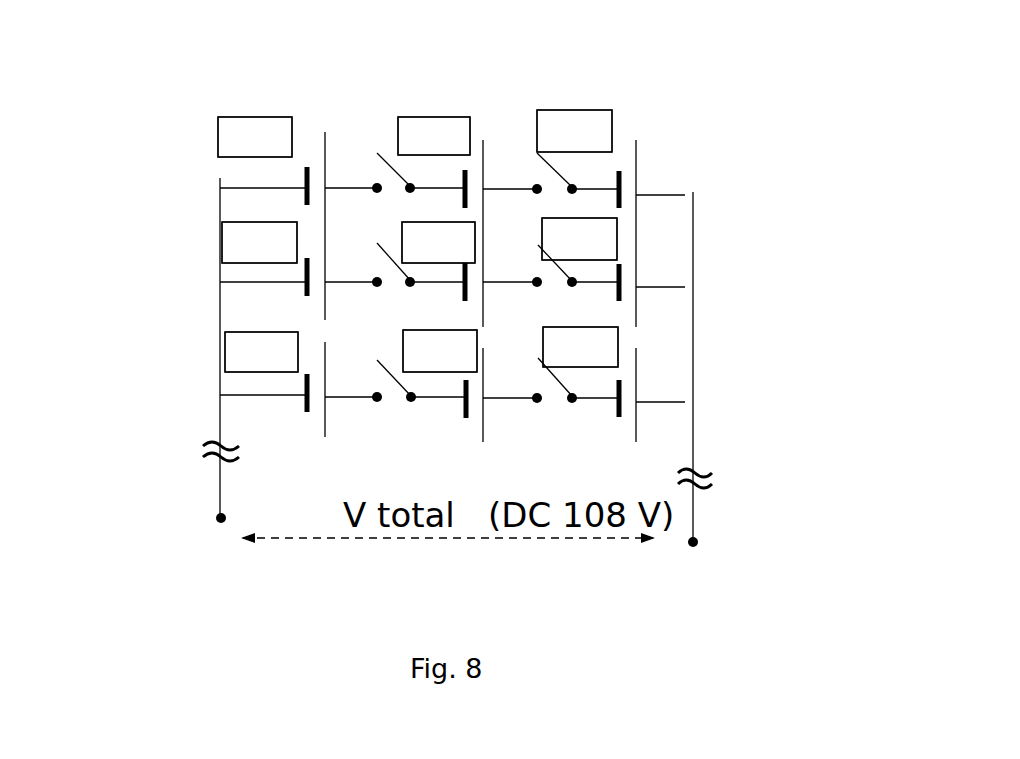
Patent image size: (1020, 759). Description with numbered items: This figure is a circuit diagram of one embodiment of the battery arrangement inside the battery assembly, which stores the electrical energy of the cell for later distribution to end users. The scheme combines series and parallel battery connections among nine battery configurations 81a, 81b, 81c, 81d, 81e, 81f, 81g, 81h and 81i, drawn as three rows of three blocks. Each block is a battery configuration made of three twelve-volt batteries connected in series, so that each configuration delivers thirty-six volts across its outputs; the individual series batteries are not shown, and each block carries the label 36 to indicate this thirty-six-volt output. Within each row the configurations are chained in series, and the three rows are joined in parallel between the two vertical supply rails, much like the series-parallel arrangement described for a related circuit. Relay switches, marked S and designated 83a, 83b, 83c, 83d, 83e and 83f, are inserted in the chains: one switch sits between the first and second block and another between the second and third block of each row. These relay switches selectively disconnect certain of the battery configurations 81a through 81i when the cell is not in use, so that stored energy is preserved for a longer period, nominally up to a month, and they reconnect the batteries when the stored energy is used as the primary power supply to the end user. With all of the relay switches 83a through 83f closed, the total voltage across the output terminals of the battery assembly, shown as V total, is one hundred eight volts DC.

The cell monitoring unit 36 is at (418, 241).
The battery configuration 81a is at (620, 360).
The battery configuration 81b is at (620, 250).
The battery configuration 81c is at (613, 133).
The battery configuration 81d is at (403, 360).
The battery configuration 81e is at (365, 248).
The battery configuration 81f is at (400, 116).
The battery configuration 81g is at (224, 357).
The battery configuration 81h is at (222, 250).
The battery configuration 81i is at (217, 143).
The relay switch 83a is at (537, 378).
The relay switch 83b is at (515, 233).
The relay switch 83c is at (515, 150).
The relay switch 83d is at (363, 377).
The relay switch 83e is at (363, 232).
The relay switch 83f is at (360, 152).